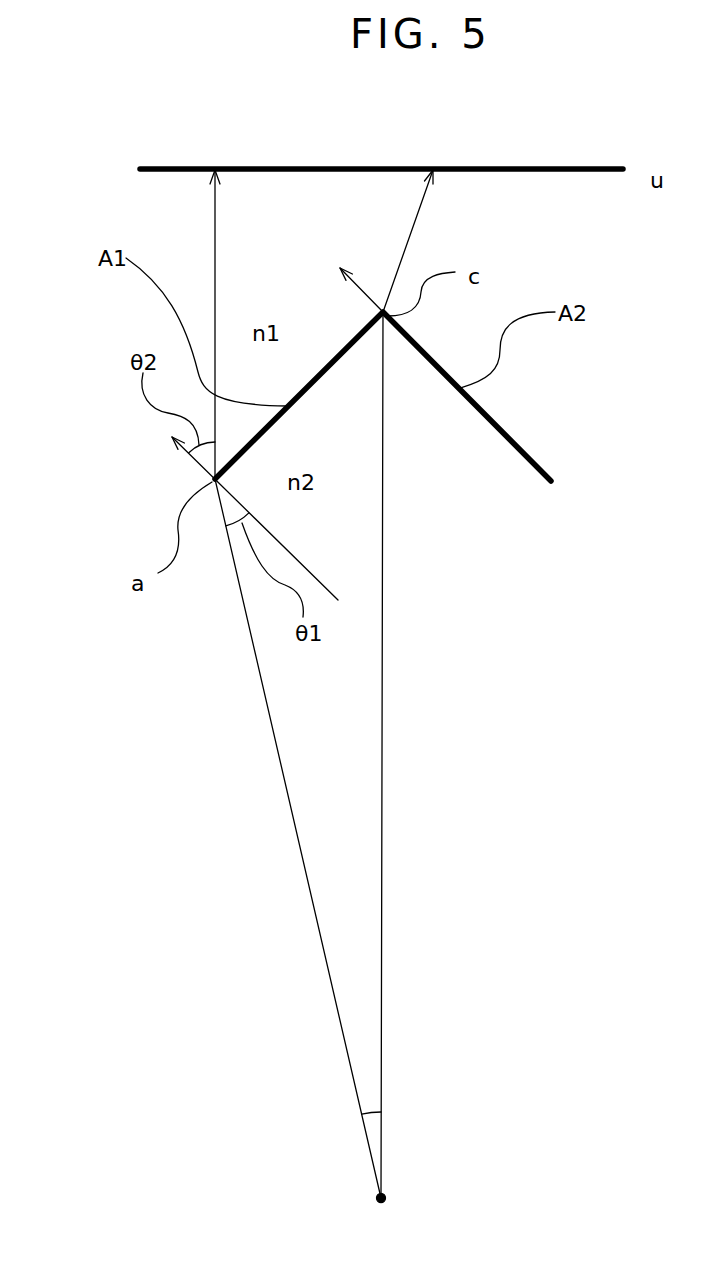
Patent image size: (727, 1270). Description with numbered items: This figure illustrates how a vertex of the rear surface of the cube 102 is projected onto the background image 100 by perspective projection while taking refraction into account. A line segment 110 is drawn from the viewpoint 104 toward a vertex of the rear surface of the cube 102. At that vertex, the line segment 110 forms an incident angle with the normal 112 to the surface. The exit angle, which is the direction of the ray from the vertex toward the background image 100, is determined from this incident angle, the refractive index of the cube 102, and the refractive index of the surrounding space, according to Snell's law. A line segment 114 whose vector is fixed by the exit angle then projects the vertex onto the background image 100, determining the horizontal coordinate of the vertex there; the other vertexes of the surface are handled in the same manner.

The background image 100 is at (470, 169).
The cube 102 is at (497, 423).
The viewpoint 104 is at (376, 1215).
The line segment 110 is at (250, 637).
The normal 112 is at (202, 465).
The line segment 114 is at (216, 215).